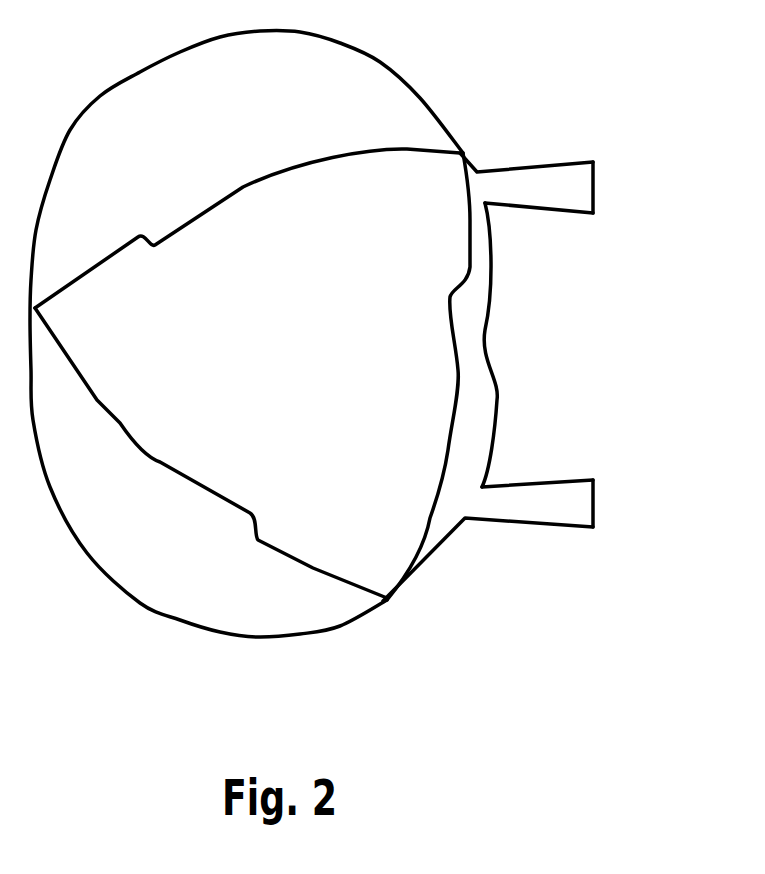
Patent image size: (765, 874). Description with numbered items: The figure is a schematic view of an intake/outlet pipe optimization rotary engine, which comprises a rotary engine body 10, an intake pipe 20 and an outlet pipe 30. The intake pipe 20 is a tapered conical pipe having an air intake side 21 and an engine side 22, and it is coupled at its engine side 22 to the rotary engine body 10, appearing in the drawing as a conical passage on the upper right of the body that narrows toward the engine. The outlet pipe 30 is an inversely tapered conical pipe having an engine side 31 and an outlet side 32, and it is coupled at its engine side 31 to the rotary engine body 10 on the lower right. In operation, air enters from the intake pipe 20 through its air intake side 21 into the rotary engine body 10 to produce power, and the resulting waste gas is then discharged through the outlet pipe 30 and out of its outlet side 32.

The rotary engine body 10 is at (375, 63).
The intake pipe 20 is at (583, 186).
The air intake side 21 is at (593, 186).
The engine side 22 is at (485, 203).
The outlet pipe 30 is at (548, 515).
The engine side 31 is at (482, 487).
The outlet side 32 is at (593, 507).